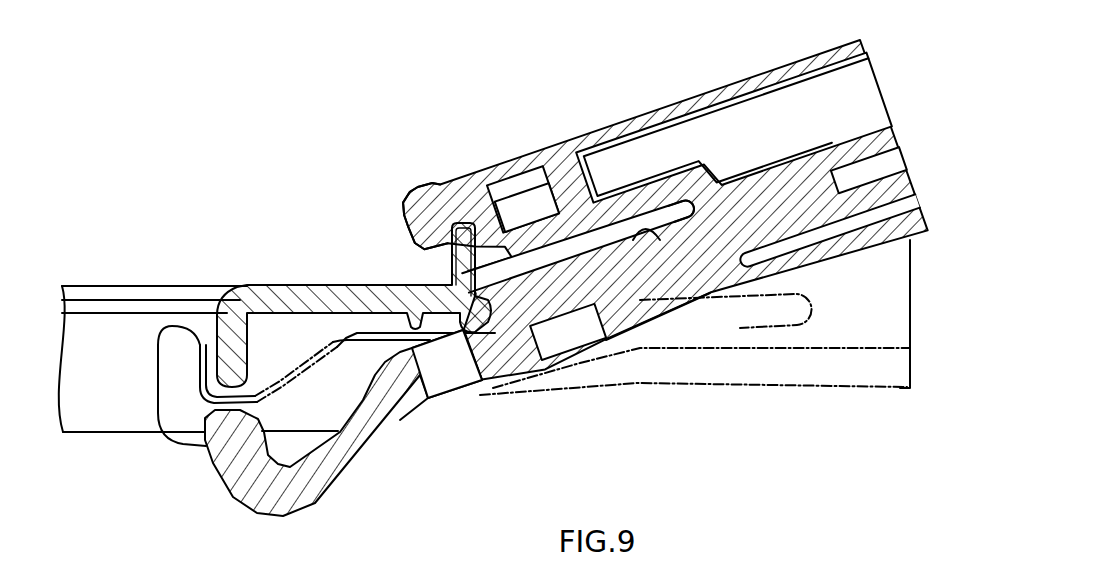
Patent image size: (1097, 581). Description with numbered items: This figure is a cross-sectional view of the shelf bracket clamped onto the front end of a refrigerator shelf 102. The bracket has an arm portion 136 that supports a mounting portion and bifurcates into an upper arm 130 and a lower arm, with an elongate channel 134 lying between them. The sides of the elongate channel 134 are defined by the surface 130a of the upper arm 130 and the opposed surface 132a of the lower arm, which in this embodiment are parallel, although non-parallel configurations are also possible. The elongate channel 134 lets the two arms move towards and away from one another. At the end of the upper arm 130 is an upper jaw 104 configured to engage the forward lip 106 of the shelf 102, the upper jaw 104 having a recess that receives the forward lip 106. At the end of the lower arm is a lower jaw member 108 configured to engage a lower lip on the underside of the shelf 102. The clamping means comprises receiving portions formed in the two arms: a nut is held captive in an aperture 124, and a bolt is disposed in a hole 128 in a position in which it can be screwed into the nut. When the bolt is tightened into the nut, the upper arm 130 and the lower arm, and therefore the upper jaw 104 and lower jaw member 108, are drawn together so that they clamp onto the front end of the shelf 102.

The shelf 102 is at (200, 286).
The upper jaw 104 is at (470, 173).
The forward lip 106 is at (462, 262).
The lower jaw member 108 is at (337, 473).
The aperture 124 is at (527, 185).
The hole 128 is at (560, 337).
The upper arm 130 is at (403, 203).
The surface of upper arm 130a is at (678, 205).
The surface of lower arm 132a is at (650, 232).
The elongate channel 134 is at (600, 237).
The arm portion 136 is at (857, 298).